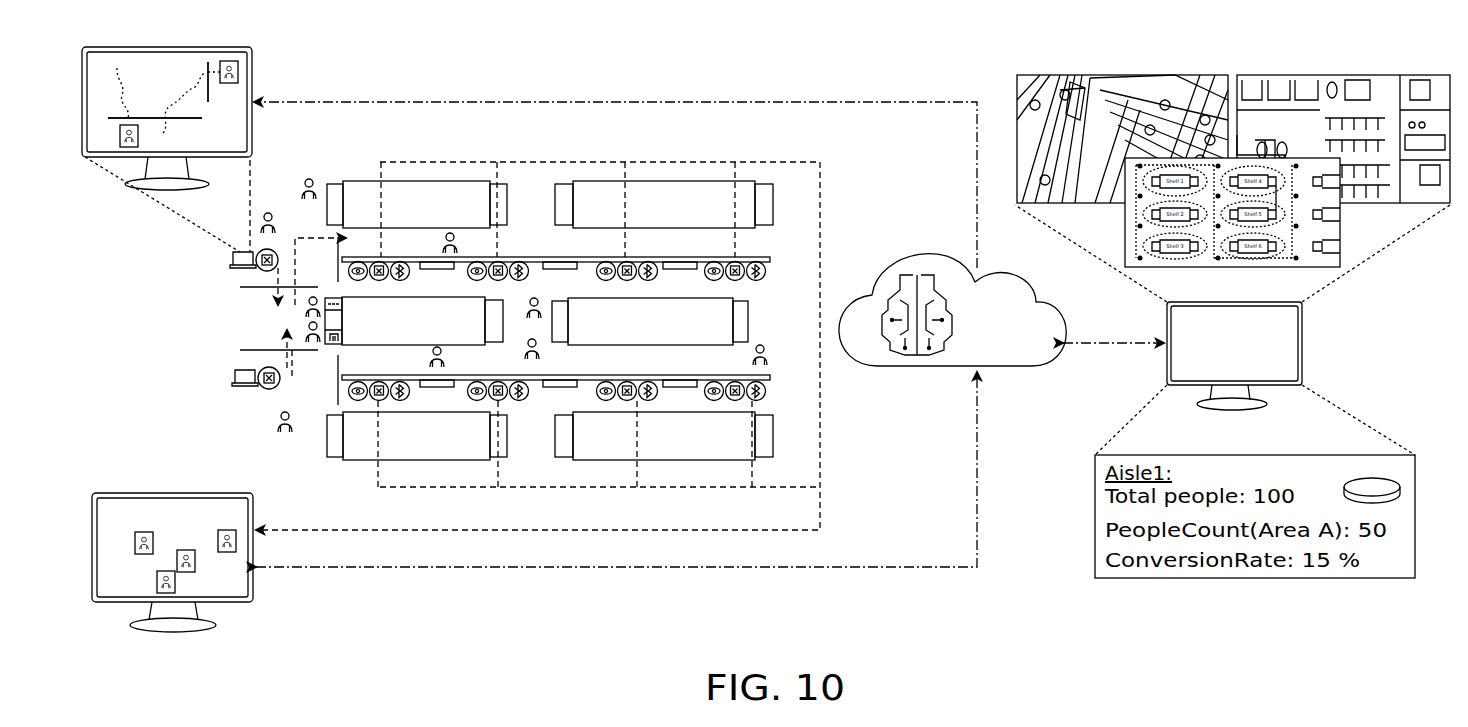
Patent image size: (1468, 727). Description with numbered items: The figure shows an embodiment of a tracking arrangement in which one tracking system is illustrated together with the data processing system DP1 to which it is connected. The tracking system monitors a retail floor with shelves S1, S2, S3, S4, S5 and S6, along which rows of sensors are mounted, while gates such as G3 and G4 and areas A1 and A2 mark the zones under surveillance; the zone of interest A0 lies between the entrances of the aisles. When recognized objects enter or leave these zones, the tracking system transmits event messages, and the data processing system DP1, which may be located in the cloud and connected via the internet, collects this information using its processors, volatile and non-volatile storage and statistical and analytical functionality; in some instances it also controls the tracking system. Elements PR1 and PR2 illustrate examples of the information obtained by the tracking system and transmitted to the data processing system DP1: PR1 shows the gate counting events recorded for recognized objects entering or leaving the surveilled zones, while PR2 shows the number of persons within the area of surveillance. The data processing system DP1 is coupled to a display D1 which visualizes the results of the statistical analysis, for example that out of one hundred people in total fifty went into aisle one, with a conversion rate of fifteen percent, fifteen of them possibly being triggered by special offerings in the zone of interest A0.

The gate counting information PR1 is at (167, 137).
The person count information PR2 is at (172, 549).
The third gate G3 is at (311, 364).
The fourth gate G4 is at (319, 380).
The zone of interest A0 is at (286, 318).
The area A1 is at (290, 206).
The area A2 is at (266, 417).
The shelf S1 is at (417, 204).
The shelf S2 is at (414, 321).
The shelf S3 is at (417, 436).
The shelf S4 is at (664, 204).
The shelf S5 is at (650, 321).
The shelf S6 is at (664, 436).
The data processing system DP1 is at (1025, 367).
The display D1 is at (1302, 340).